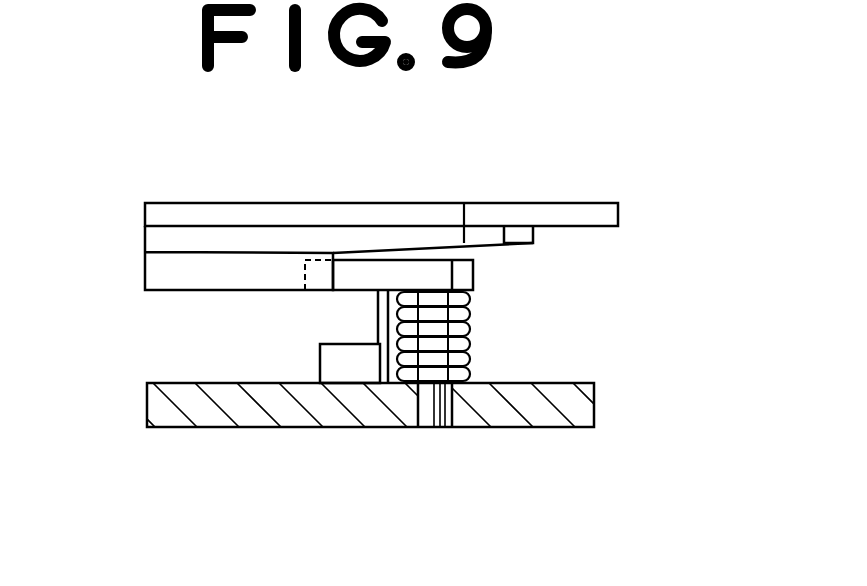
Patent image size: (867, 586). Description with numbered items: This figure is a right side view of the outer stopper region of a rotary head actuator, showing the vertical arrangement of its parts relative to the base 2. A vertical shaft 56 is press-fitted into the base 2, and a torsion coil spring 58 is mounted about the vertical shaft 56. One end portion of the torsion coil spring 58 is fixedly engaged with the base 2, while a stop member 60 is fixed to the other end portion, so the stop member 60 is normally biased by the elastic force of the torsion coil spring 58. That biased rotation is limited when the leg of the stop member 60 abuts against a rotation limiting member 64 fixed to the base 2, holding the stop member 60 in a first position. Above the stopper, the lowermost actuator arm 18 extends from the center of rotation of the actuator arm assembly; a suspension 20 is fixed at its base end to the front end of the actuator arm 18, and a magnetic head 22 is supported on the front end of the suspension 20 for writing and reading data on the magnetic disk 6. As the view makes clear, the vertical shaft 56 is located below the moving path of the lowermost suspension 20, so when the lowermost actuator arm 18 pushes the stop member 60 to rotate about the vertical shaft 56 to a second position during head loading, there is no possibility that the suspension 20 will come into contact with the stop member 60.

The base 2 is at (575, 410).
The magnetic disk 6 is at (587, 201).
The actuator arm 18 is at (145, 270).
The suspension 20 is at (465, 203).
The magnetic head 22 is at (533, 243).
The vertical shaft 56 is at (432, 420).
The torsion coil spring 58 is at (473, 328).
The stop member 60 is at (348, 292).
The rotation limiting member 64 is at (328, 357).